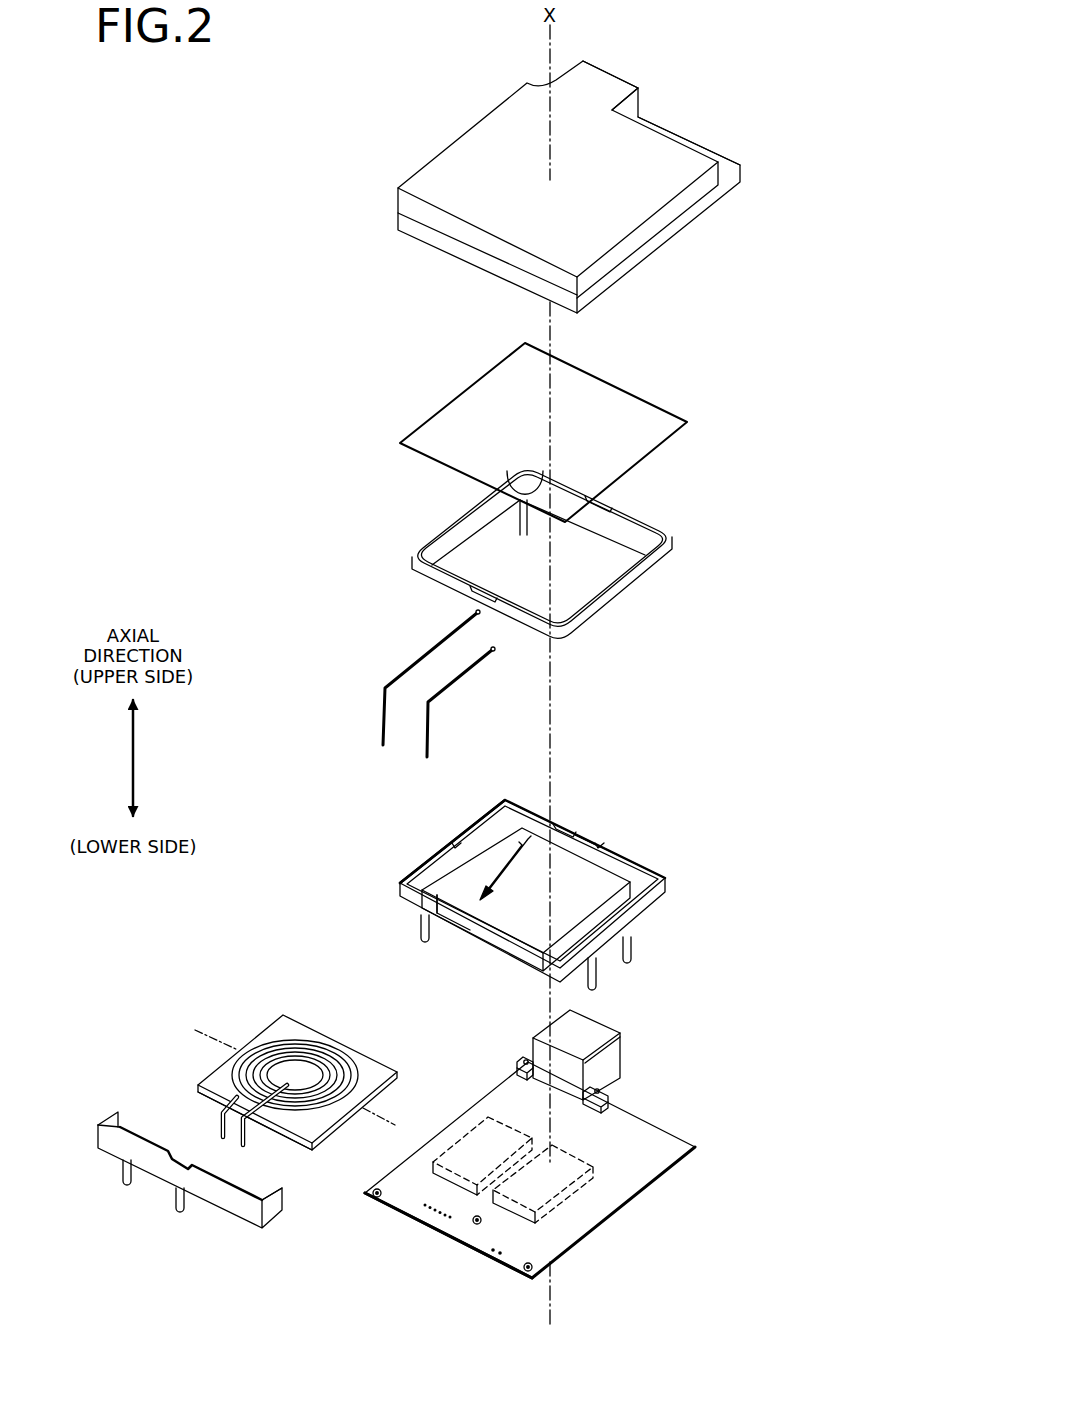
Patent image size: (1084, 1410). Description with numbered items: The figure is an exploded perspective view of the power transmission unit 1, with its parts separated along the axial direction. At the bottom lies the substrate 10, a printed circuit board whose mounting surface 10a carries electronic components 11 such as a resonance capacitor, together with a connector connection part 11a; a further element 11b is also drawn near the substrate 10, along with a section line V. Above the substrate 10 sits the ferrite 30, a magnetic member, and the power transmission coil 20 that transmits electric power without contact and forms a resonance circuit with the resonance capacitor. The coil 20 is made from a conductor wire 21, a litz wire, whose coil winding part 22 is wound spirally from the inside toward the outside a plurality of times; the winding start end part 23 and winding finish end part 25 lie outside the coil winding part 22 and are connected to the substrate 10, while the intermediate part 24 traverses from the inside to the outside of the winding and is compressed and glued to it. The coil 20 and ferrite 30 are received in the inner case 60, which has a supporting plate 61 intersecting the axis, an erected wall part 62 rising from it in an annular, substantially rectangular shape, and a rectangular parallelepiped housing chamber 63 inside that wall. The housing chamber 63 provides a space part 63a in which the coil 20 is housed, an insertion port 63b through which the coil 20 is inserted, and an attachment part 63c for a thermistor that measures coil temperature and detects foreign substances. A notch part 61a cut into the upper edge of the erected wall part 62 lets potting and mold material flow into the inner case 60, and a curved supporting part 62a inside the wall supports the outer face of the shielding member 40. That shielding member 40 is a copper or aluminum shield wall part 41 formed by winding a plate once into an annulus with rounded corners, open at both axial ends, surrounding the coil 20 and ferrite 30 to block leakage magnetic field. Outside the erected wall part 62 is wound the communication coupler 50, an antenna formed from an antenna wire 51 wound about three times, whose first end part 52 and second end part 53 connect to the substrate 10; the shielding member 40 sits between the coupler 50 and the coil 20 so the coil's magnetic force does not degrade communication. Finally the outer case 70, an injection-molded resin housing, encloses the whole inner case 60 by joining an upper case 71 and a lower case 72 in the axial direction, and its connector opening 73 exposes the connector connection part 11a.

The power transmission unit 1 is at (343, 160).
The substrate 10 is at (530, 1167).
The mounting surface 10a is at (527, 1243).
The electronic components 11 is at (478, 1143).
The connector connection part 11a is at (608, 1062).
The lead wires 11b is at (458, 675).
The power transmission coil 20 is at (298, 1092).
The conductor wire 21 is at (295, 1075).
The coil winding part 22 is at (295, 1075).
The winding start end part 23 is at (247, 1132).
The intermediate part 24 is at (285, 1128).
The winding finish end part 25 is at (220, 1117).
The ferrite 30 is at (372, 1072).
The shielding member 40 is at (542, 554).
The shield wall part 41 is at (620, 528).
The communication coupler 50 is at (567, 432).
The antenna wire 51 is at (657, 407).
The first end part 52 is at (525, 536).
The second end part 53 is at (518, 498).
The inner case 60 is at (456, 1005).
The supporting plate 61 is at (402, 903).
The notch part 61a is at (585, 843).
The erected wall part 62 is at (417, 878).
The supporting part 62a is at (458, 853).
The housing chamber 63 is at (492, 860).
The space part 63a is at (465, 925).
The insertion port 63b is at (440, 913).
The attachment part 63c is at (503, 862).
The outer case 70 is at (590, 170).
The upper case 71 is at (643, 233).
The lower case 72 is at (690, 217).
The connector opening 73 is at (610, 72).
The section line V- V is at (216, 1033).